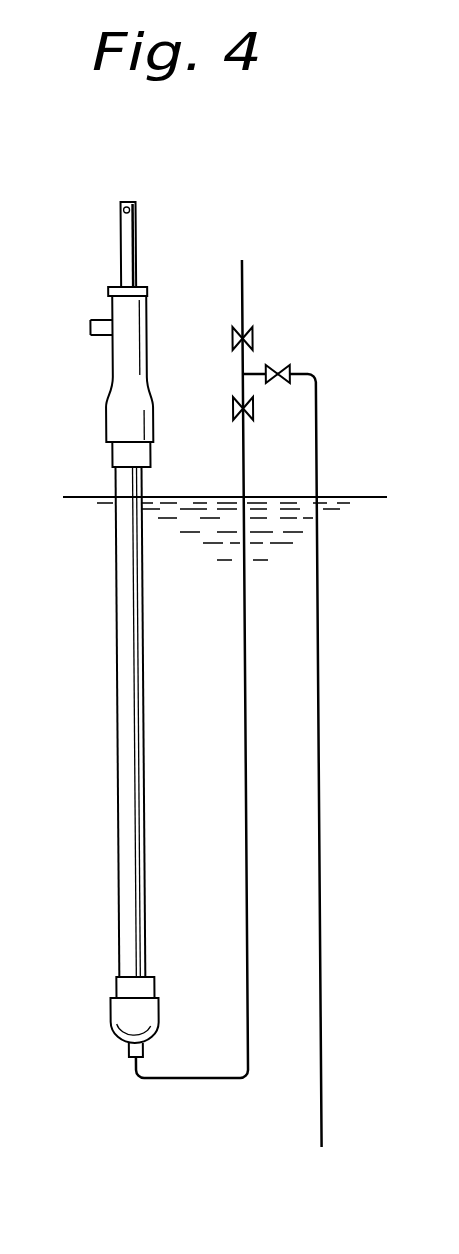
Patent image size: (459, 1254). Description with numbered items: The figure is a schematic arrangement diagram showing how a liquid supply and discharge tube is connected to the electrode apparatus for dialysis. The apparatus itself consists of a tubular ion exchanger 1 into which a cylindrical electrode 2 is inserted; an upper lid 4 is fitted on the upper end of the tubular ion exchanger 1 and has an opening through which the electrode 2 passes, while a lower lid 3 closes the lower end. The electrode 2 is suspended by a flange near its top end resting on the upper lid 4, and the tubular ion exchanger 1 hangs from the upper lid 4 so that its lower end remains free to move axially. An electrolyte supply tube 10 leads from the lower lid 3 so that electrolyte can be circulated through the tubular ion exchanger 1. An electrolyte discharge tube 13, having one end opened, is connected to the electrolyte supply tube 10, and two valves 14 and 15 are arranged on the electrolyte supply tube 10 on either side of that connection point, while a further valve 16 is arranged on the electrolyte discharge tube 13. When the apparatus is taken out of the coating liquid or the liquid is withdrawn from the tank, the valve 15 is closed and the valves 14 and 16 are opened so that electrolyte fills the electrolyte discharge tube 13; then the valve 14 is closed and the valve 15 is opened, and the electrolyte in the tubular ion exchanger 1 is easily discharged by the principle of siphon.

The tubular ion exchanger 1 is at (115, 567).
The electrode 2 is at (121, 248).
The lower lid 3 is at (108, 1022).
The upper lid 4 is at (106, 400).
The electrolyte supply tube 10 is at (243, 278).
The electrolyte discharge tube 13 is at (317, 428).
The valve 14 is at (250, 328).
The valve 15 is at (232, 402).
The valve 16 is at (290, 366).